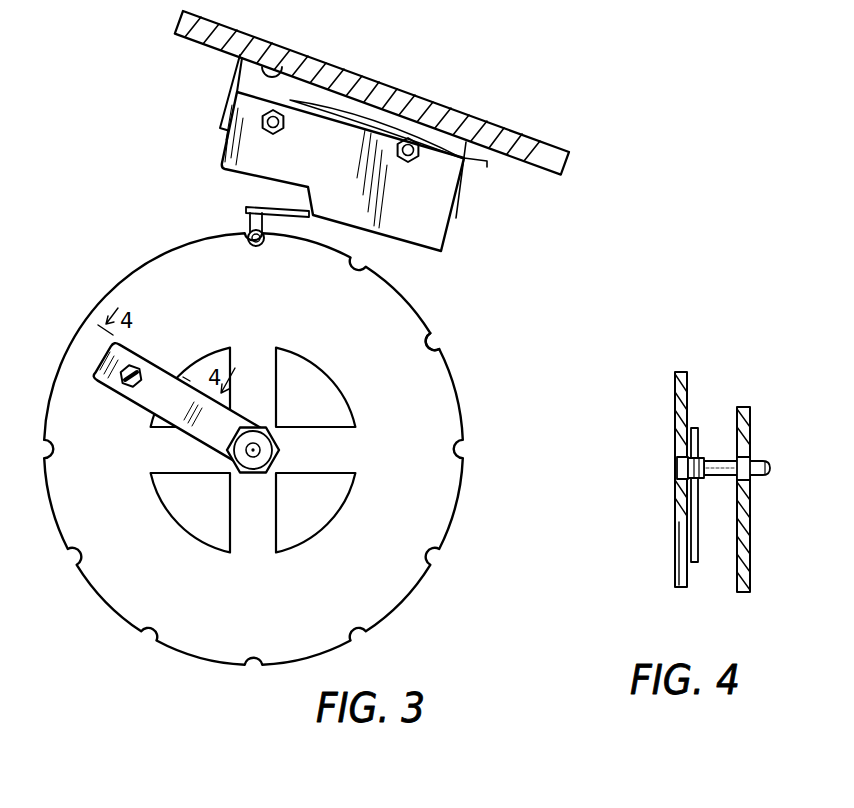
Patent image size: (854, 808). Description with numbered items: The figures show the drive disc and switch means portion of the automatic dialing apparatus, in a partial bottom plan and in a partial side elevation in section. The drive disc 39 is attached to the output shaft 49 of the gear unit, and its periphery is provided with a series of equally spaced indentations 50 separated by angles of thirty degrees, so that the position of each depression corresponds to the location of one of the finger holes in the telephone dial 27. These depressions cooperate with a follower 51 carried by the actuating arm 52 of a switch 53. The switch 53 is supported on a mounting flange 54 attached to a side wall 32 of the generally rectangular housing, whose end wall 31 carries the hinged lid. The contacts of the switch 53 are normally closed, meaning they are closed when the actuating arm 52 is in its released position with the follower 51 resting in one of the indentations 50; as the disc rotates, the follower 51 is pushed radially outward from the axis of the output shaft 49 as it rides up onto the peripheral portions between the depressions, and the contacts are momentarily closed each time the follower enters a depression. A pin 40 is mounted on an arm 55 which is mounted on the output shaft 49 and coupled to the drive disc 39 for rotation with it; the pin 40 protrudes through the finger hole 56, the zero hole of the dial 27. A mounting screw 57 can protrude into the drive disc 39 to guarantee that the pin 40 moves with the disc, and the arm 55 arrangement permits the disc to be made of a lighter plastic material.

In FIG. 4, the dial 27 is at (748, 408).
In FIG. 3, the end wall 31 is at (134, 276).
In FIG. 3, the side wall 32 is at (333, 66).
In FIG. 4, the drive disc 39 is at (675, 395).
In FIG. 3, the pin 40 is at (130, 387).
In FIG. 4, the pin 40 is at (762, 476).
In FIG. 3, the output shaft 49 is at (259, 450).
In FIG. 3, the indentations 50 is at (432, 342).
In FIG. 3, the follower 51 is at (246, 230).
In FIG. 3, the actuating arm 52 is at (272, 207).
In FIG. 3, the switch 53 is at (443, 247).
In FIG. 3, the mounting flange 54 is at (245, 60).
In FIG. 3, the arm 55 is at (197, 441).
In FIG. 4, the arm 55 is at (698, 503).
In FIG. 4, the finger hole 56 is at (744, 450).
In FIG. 4, the mounting screw 57 is at (678, 468).